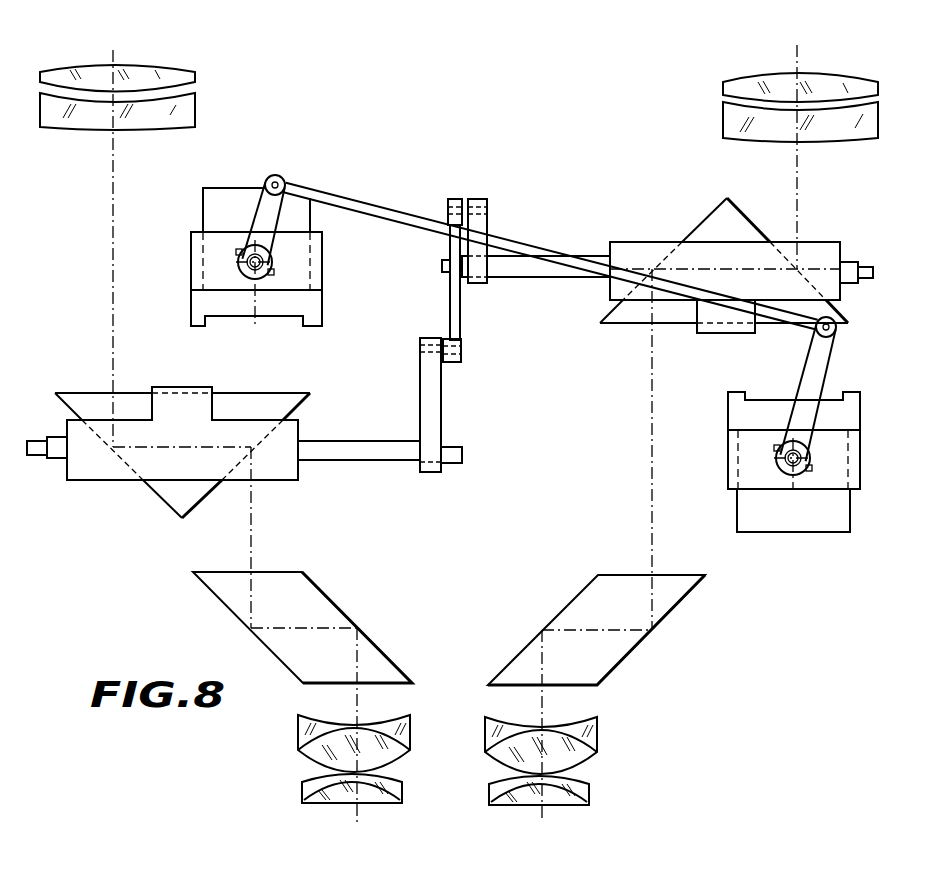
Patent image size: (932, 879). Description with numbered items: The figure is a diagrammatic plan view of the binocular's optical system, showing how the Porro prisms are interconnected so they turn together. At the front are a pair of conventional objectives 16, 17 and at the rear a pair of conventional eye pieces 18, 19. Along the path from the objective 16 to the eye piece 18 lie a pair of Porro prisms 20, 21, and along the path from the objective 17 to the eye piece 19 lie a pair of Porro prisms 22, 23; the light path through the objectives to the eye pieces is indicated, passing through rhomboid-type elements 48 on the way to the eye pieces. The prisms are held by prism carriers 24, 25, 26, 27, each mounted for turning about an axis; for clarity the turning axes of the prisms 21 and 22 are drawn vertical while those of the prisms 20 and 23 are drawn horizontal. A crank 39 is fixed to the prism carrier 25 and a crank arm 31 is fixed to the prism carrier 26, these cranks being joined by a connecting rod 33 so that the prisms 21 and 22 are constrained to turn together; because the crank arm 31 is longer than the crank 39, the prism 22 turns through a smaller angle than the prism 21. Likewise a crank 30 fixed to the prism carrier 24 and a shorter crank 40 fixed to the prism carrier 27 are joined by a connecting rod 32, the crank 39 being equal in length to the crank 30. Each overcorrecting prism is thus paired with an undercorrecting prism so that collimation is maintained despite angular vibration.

The objective 16 is at (180, 62).
The objective 17 is at (845, 82).
The eye piece 18 is at (308, 739).
The eye piece 19 is at (490, 740).
The Porro prism 20 is at (175, 503).
The Porro prism 21 is at (203, 214).
The Porro prism 22 is at (784, 524).
The Porro prism 23 is at (676, 318).
The prism carrier 24 is at (192, 444).
The prism carrier 25 is at (233, 284).
The prism carrier 26 is at (769, 483).
The prism carrier 27 is at (828, 277).
The crank arm 30 is at (433, 402).
The crank arm 31 is at (815, 380).
The connecting rod 32 is at (455, 316).
The connecting rod 33 is at (388, 208).
The crank arm 39 is at (272, 214).
The crank arm 40 is at (483, 223).
The rhomboid prism 48 is at (296, 617).